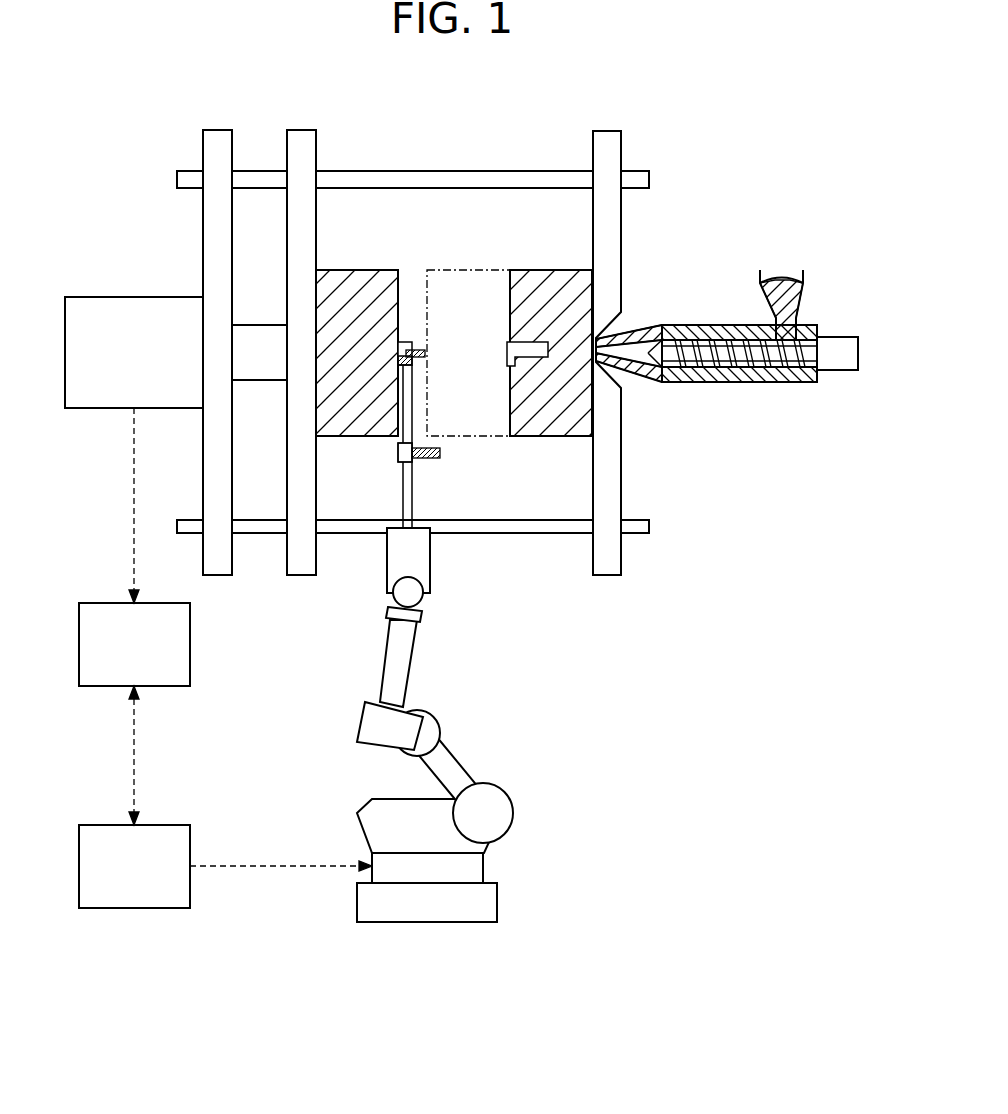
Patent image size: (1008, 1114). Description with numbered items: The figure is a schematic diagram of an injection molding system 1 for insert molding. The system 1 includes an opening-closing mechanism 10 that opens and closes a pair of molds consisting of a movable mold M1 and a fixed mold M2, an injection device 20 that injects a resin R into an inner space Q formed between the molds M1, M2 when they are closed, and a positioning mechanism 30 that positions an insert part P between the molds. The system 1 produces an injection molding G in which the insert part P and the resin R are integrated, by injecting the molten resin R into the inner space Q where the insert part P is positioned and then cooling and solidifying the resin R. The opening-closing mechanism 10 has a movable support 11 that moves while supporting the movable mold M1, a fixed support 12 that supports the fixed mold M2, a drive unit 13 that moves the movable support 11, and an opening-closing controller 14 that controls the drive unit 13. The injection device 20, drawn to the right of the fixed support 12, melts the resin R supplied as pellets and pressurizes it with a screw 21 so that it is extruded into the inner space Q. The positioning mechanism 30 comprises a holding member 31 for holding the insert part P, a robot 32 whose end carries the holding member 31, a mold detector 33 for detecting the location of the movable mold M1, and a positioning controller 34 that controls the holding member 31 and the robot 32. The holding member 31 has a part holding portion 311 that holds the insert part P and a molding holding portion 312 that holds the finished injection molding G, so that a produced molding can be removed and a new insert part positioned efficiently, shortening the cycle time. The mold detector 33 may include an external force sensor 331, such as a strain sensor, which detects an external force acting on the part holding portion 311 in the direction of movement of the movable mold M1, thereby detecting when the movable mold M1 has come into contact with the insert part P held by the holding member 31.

The injection molding system 1 is at (793, 154).
The opening-closing mechanism 10 is at (478, 158).
The movable support 11 is at (316, 158).
The fixed support 12 is at (593, 158).
The drive unit 13 is at (133, 296).
The opening-closing controller 14 is at (93, 602).
The injection device 20 is at (703, 302).
The screw 21 is at (737, 382).
The positioning mechanism 30 is at (484, 662).
The holding member 31 is at (430, 495).
The robot 32 is at (457, 755).
The mold detector 33 is at (414, 372).
The positioning controller 34 is at (93, 824).
The part holding portion 311 is at (413, 344).
The molding holding portion 312 is at (413, 457).
The external force sensor 331 is at (426, 372).
The movable mold M1 is at (352, 269).
The fixed mold M2 is at (549, 269).
The inner space Q is at (536, 348).
The insert part P is at (426, 354).
The injection molding G is at (384, 452).
The resin R is at (780, 268).